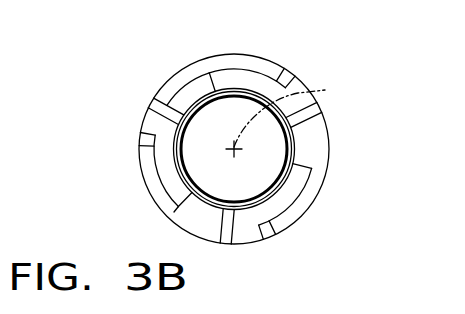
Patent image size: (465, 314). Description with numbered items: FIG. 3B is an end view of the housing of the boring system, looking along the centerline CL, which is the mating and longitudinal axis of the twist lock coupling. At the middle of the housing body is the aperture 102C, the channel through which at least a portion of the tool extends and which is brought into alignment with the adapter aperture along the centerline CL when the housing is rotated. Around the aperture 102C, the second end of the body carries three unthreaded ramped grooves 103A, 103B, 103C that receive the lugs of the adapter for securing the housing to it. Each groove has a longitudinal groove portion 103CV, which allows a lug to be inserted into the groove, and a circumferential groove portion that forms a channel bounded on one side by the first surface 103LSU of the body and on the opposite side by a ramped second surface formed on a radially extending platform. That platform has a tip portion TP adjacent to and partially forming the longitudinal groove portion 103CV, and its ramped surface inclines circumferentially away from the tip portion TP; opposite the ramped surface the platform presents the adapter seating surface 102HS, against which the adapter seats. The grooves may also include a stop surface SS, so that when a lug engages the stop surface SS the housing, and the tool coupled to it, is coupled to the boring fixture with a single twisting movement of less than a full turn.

The aperture 102C is at (262, 178).
The adapter seating surface 102HS is at (213, 70).
The groove 103A is at (333, 126).
The groove 103B is at (207, 243).
The groove 103C is at (178, 65).
The longitudinal groove portion 103CV is at (178, 91).
The first surface 103LSU is at (273, 73).
The stop surface SS is at (141, 143).
The tip portion TP is at (182, 214).
The centerline CL is at (294, 112).